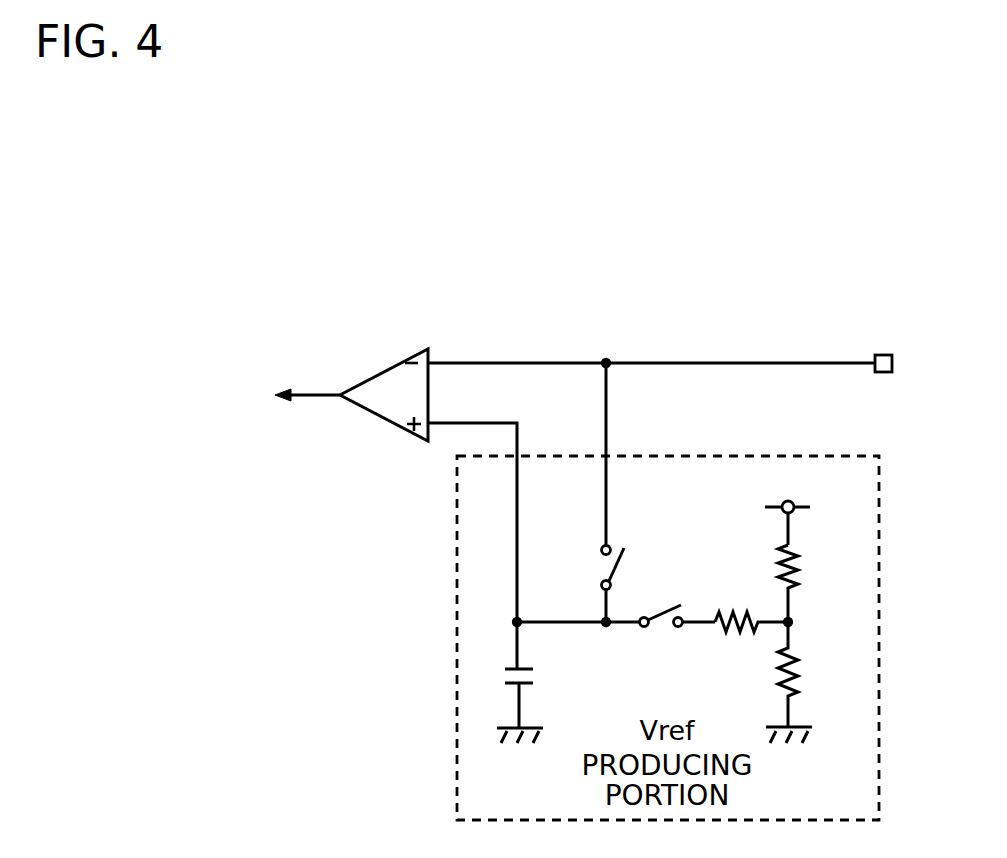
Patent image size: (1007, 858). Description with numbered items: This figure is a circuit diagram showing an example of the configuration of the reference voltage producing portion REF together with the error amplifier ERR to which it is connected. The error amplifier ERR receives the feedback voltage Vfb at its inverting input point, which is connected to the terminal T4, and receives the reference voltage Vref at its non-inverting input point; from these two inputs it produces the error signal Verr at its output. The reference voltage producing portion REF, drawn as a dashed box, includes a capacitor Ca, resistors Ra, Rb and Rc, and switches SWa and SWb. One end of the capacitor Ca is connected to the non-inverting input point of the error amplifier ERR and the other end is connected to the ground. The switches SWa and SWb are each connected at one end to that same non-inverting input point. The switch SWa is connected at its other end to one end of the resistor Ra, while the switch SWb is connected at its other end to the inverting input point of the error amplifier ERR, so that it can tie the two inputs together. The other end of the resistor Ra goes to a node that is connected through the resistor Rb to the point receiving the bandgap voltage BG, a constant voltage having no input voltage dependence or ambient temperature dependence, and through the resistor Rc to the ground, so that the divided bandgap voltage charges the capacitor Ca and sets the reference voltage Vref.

The error amplifier ERR is at (382, 371).
The error signal Verr is at (276, 396).
The feedback voltage Vfb is at (651, 350).
The reference voltage Vref is at (475, 510).
The terminal T4 is at (893, 364).
The reference voltage producing portion REF is at (737, 456).
The switch SWa is at (664, 607).
The switch SWb is at (603, 572).
The resistor Ra is at (741, 604).
The resistor Rb is at (805, 572).
The resistor Rc is at (805, 677).
The capacitor Ca is at (535, 679).
The bandgap voltage BG is at (787, 508).